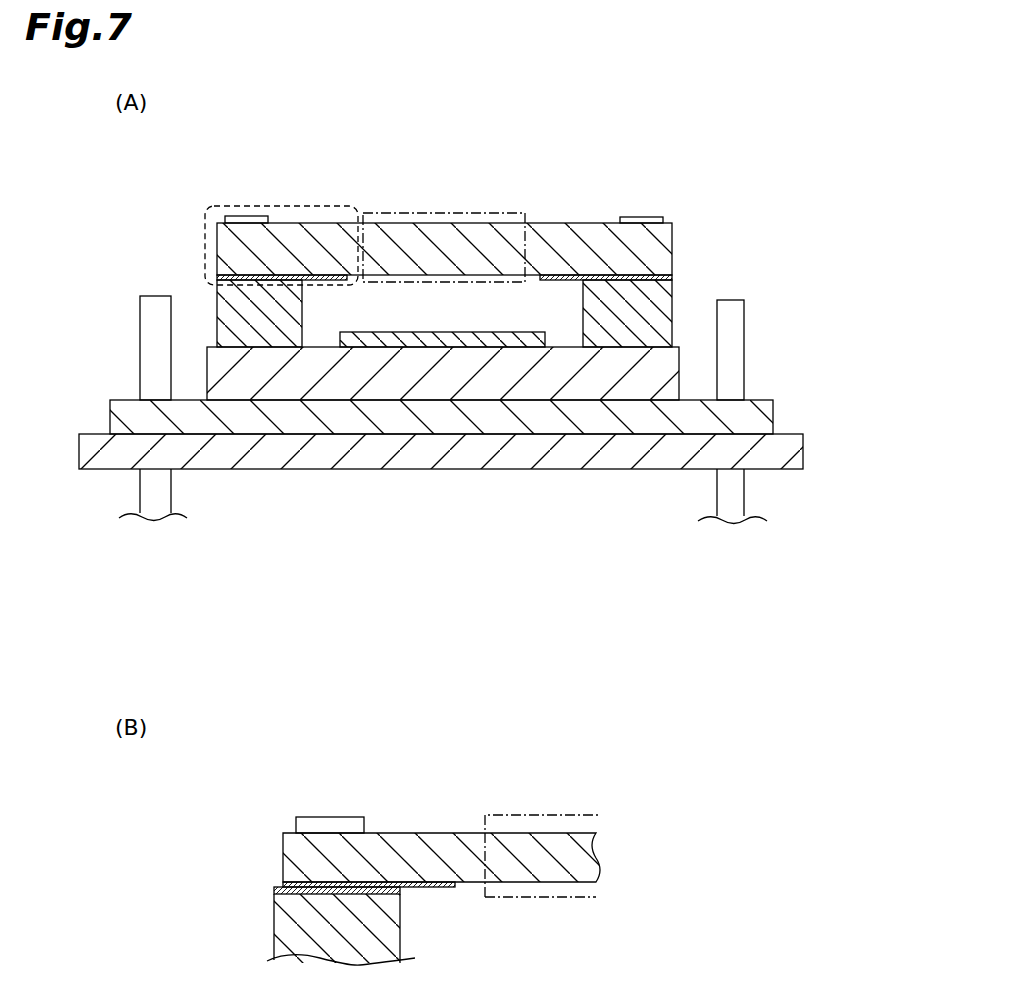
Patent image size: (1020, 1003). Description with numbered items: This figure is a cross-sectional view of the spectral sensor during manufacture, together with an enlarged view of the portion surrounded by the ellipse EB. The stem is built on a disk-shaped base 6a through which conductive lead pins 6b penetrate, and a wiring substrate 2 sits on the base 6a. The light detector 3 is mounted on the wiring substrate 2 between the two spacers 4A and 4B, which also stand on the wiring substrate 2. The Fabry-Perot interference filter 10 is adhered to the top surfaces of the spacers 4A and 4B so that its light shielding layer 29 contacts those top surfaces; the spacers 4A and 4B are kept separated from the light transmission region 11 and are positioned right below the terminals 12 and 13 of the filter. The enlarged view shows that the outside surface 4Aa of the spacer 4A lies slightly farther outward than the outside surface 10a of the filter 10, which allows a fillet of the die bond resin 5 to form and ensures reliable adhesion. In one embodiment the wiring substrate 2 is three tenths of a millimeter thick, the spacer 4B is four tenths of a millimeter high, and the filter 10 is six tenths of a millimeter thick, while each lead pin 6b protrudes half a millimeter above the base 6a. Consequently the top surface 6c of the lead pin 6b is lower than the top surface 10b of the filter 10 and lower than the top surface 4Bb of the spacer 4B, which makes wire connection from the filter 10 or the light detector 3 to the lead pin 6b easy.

The wiring substrate 2 is at (672, 370).
The light detector 3 is at (437, 341).
The spacer 4A is at (287, 311).
The spacer 4B is at (590, 310).
The outside surface of the spacer 4Aa is at (256, 273).
The top surface of the spacer 4Bb is at (630, 277).
The die bond resin 5 is at (275, 890).
The base 6a is at (762, 417).
The lead pin 6b is at (157, 330).
The top surface of the lead pin 6c is at (150, 296).
The Fabry-Perot interference filter 10 is at (575, 242).
The outside surface of the Fabry-Perot interference filter 10a is at (283, 853).
The top surface of the Fabry-Perot interference filter 10b is at (555, 223).
The light transmission region 11 is at (492, 213).
The terminal 12 is at (254, 217).
The terminal 13 is at (645, 218).
The light shielding layer 29 is at (216, 278).
The ellipse EB is at (325, 206).